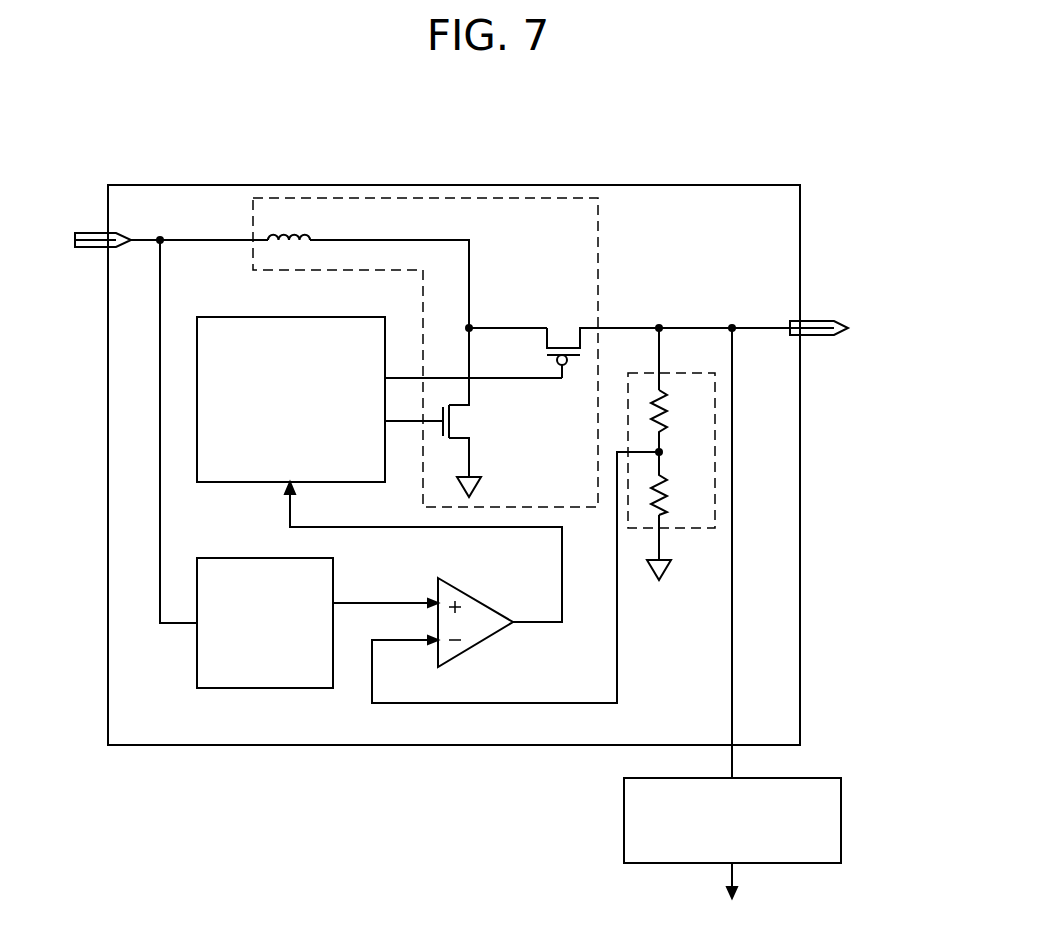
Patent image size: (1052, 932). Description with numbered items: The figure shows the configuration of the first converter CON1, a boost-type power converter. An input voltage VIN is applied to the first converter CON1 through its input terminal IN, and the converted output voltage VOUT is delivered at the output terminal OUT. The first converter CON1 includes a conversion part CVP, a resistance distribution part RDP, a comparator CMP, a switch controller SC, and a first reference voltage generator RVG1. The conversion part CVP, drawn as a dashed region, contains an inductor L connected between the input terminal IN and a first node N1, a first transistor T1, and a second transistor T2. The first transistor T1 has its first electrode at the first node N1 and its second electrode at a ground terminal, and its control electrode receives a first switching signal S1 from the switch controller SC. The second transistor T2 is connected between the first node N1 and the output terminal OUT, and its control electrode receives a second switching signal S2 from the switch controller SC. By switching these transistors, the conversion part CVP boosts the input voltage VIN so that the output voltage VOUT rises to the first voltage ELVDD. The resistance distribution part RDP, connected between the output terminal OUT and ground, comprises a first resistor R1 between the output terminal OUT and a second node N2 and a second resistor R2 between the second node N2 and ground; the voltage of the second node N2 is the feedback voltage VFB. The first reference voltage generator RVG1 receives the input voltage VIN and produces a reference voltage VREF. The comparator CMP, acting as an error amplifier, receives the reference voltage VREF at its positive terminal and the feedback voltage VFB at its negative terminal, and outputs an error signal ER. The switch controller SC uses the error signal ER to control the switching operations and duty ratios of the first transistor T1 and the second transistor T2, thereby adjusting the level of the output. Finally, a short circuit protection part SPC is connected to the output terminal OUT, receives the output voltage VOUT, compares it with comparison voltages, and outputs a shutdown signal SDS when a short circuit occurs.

The first converter CON1 is at (730, 186).
The input terminal IN is at (78, 233).
The input voltage VIN is at (73, 241).
The conversion part CVP is at (444, 197).
The inductor L is at (368, 268).
The switch controller SC is at (231, 317).
The first node N1 is at (506, 316).
The second transistor T2 is at (602, 340).
The second switching signal S2 is at (473, 366).
The first transistor T1 is at (468, 412).
The first switching signal S1 is at (414, 412).
The output terminal OUT is at (820, 340).
The output voltage VOUT is at (856, 312).
The resistance distribution part RDP is at (697, 530).
The first resistor R1 is at (674, 421).
The second resistor R2 is at (674, 483).
The second node N2 is at (533, 573).
The feedback voltage VFB is at (494, 692).
The short circuit protection part SPC is at (841, 820).
The shutdown signal SDS is at (732, 893).
The first reference voltage generator RVG1 is at (226, 558).
The reference voltage VREF is at (385, 593).
The error signal ER is at (423, 552).
The comparator CMP is at (475, 622).